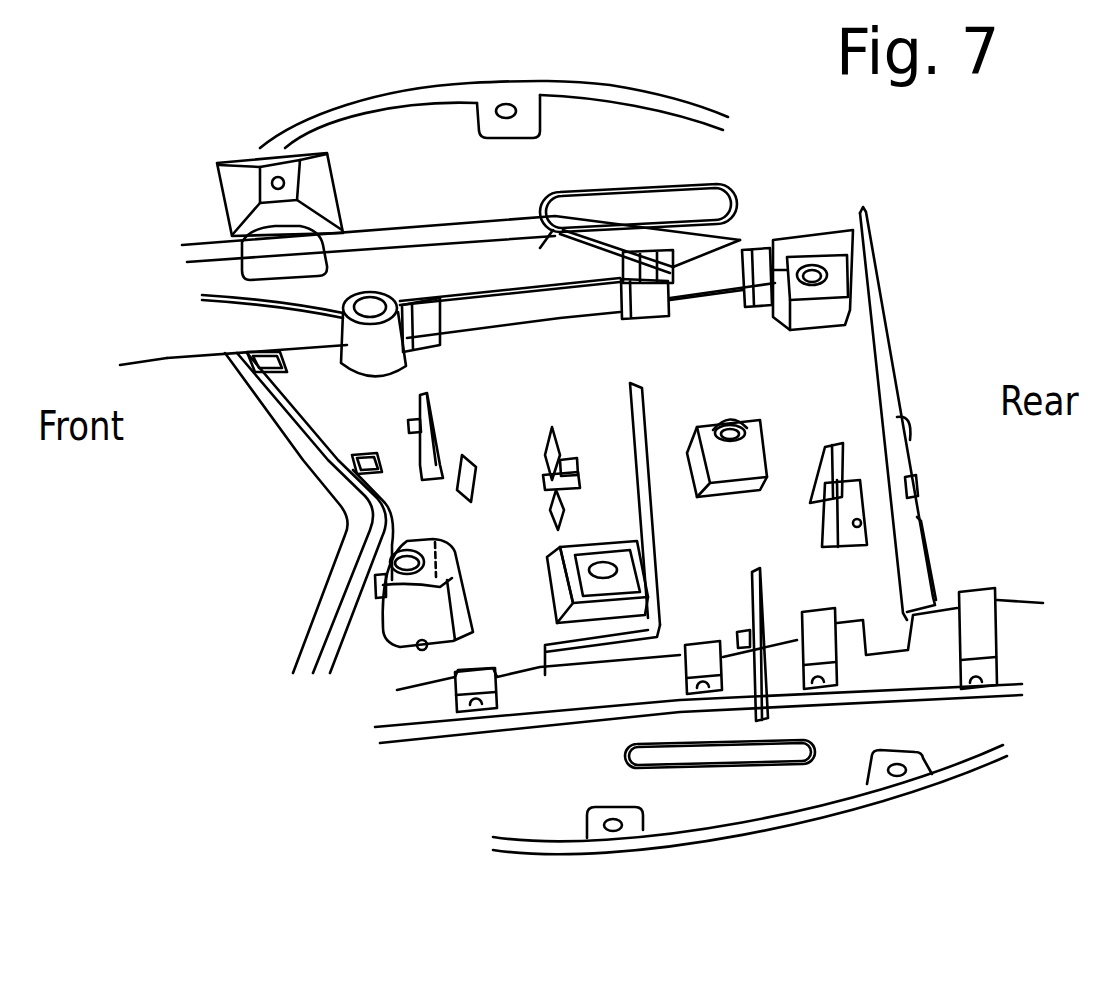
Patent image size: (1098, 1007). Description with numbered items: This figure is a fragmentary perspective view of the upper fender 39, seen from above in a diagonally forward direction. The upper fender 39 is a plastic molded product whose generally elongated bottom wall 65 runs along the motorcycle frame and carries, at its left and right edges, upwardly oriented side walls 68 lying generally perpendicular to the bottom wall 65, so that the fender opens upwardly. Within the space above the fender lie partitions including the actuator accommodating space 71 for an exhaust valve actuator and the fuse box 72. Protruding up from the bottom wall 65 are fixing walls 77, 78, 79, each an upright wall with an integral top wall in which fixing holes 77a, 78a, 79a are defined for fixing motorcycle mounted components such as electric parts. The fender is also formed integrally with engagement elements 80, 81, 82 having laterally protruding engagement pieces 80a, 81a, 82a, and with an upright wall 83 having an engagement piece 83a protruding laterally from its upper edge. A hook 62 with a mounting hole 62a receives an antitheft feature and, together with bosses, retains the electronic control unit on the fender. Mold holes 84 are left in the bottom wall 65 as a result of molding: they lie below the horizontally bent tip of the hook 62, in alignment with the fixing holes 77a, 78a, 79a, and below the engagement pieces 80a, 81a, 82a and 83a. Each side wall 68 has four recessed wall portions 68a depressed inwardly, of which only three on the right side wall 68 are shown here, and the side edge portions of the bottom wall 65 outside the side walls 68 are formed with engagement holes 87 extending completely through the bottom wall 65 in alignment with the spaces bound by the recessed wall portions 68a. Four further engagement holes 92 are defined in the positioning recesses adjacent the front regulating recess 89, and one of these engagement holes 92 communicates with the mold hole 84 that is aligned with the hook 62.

The upper fender 39 is at (494, 89).
The hook 62 is at (421, 608).
The mounting hole 62a is at (386, 664).
The bottom wall 65 is at (190, 464).
The side wall 68 is at (612, 490).
The recessed wall portion 68a is at (703, 495).
The actuator accommodating space 71 is at (836, 541).
The fuse box 72 is at (471, 486).
The fixing wall 77 is at (574, 560).
The fixing hole 77a is at (597, 537).
The fixing wall 78 is at (708, 434).
The fixing hole 78a is at (697, 406).
The fixing wall 79 is at (813, 273).
The fixing hole 79a is at (812, 231).
The engagement element 80 is at (860, 486).
The engagement piece 80a is at (894, 461).
The engagement element 81 is at (585, 458).
The engagement piece 81a is at (572, 458).
The engagement element 82 is at (422, 444).
The engagement piece 82a is at (422, 444).
The upright wall 83 is at (912, 413).
The engagement piece 83a is at (930, 406).
The mold hole 84 is at (678, 562).
The engagement hole 87 is at (700, 475).
The front regulating recess 89 is at (309, 513).
The engagement hole 92 is at (289, 490).